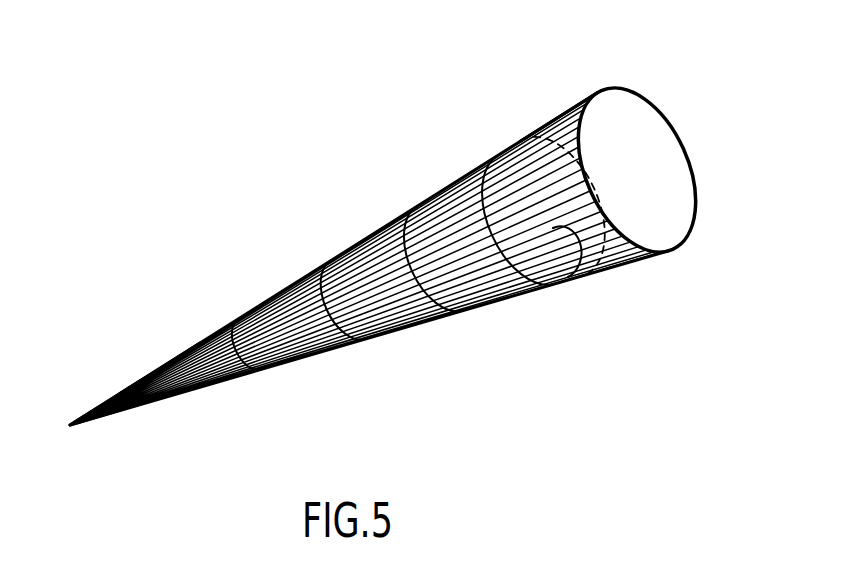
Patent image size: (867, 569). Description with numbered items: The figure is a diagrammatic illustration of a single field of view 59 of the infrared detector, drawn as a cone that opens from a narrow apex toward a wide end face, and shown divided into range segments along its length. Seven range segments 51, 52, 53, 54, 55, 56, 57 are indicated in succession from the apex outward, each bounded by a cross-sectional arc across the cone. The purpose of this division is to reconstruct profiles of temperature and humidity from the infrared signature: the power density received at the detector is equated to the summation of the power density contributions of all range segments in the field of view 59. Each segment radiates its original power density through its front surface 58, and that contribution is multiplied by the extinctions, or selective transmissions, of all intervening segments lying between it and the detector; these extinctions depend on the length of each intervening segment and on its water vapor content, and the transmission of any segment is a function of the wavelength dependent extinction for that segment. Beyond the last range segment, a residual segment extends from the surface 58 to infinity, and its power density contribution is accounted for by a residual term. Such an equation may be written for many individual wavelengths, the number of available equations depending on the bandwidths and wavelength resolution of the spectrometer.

The range segment 51 is at (93, 406).
The range segment 52 is at (138, 378).
The range segment 53 is at (215, 327).
The range segment 54 is at (297, 279).
The range segment 55 is at (375, 228).
The range segment 56 is at (468, 172).
The range segment 57 is at (552, 120).
The front surface of the segment 58 is at (567, 278).
The field of view 59 is at (668, 91).